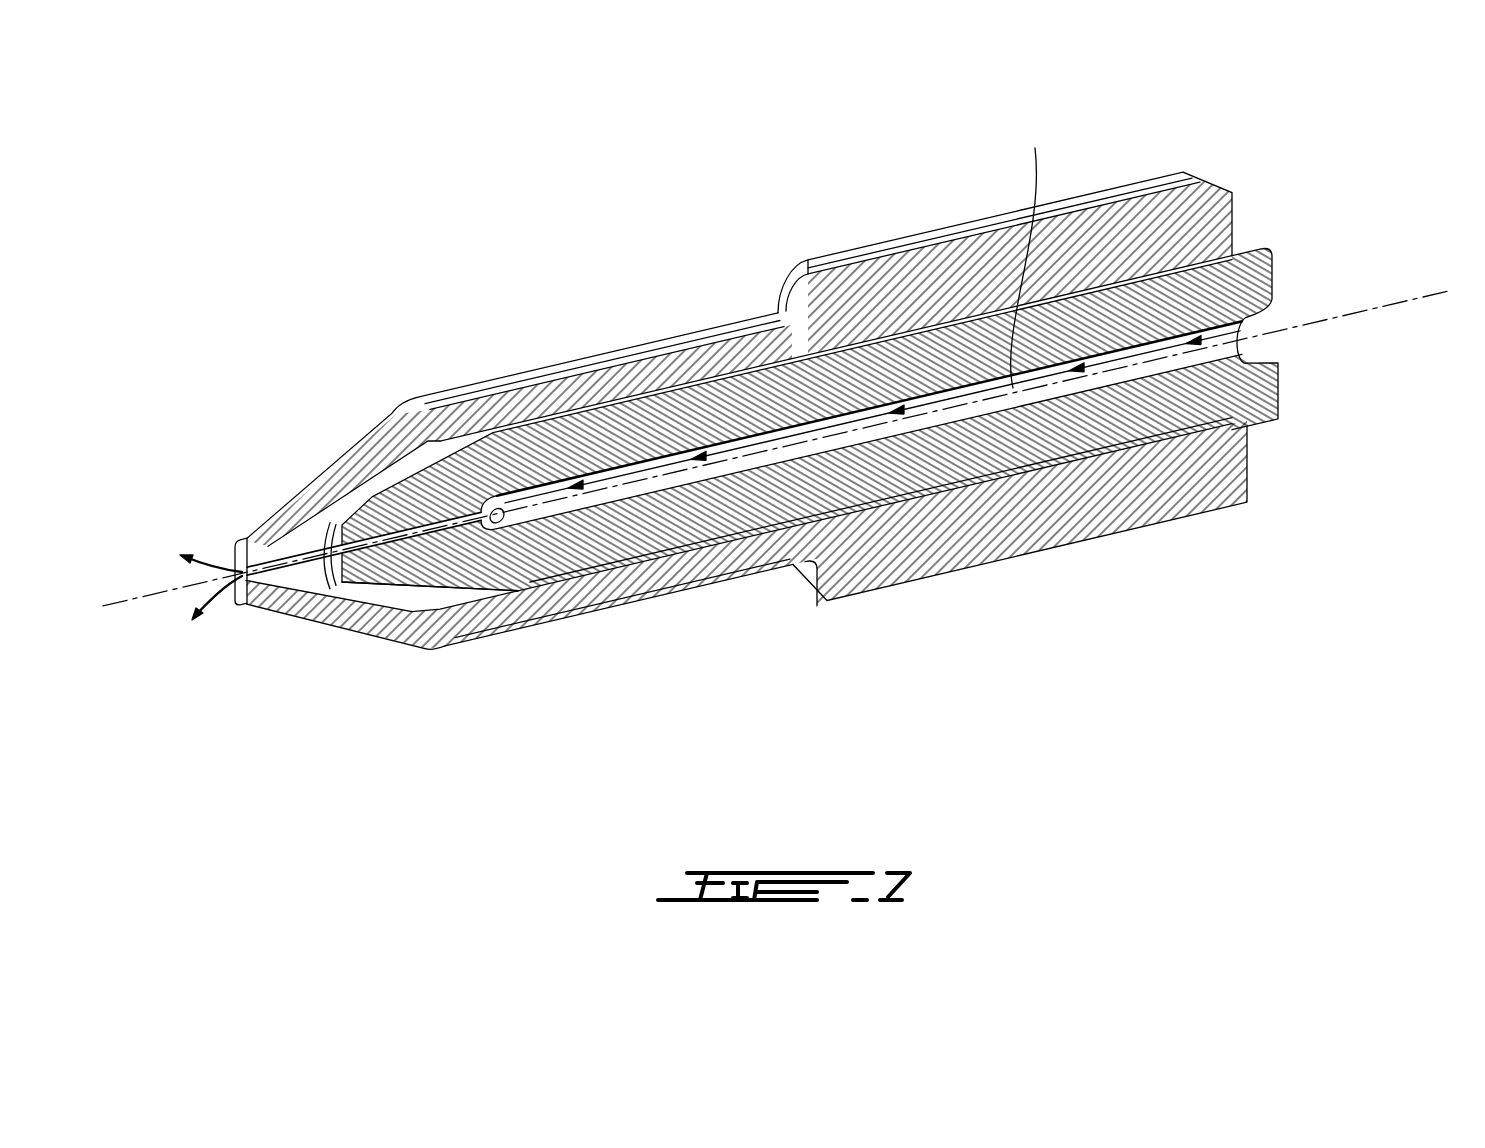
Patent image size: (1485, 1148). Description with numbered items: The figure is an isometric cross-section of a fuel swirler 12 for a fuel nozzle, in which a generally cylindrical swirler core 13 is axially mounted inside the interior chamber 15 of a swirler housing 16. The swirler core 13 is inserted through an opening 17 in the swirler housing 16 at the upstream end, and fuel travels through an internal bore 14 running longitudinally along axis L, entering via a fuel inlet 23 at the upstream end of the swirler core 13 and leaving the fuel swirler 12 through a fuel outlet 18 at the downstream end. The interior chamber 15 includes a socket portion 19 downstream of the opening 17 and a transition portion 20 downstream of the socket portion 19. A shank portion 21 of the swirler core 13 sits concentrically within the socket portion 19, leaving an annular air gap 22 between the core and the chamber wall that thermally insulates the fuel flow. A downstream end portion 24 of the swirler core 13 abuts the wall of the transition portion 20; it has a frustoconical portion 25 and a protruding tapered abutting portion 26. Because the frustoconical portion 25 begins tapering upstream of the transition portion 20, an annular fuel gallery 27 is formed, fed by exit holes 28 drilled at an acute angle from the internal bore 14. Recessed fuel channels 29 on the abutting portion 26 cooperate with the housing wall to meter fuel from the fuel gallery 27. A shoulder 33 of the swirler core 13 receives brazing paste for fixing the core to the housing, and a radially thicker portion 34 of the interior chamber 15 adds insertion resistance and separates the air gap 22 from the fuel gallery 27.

The fuel swirler 12 is at (200, 232).
The swirler core 13 is at (1020, 515).
The internal bore 14 is at (810, 441).
The interior chamber 15 is at (836, 350).
The swirler housing 16 is at (793, 286).
The opening 17 is at (1252, 283).
The fuel outlet 18 is at (241, 572).
The socket portion 19 is at (1020, 258).
The transition portion 20 is at (354, 492).
The shank portion 21 is at (875, 504).
The air gap 22 is at (531, 570).
The fuel inlet 23 is at (864, 429).
The downstream end portion 24 is at (382, 586).
The frustoconical portion 25 is at (430, 586).
The abutting portion 26 is at (364, 543).
The fuel gallery 27 is at (346, 542).
The exit holes 28 is at (497, 515).
The fuel channels 29 is at (330, 555).
The shoulder 33 is at (1255, 393).
The thicker portion 34 is at (521, 498).